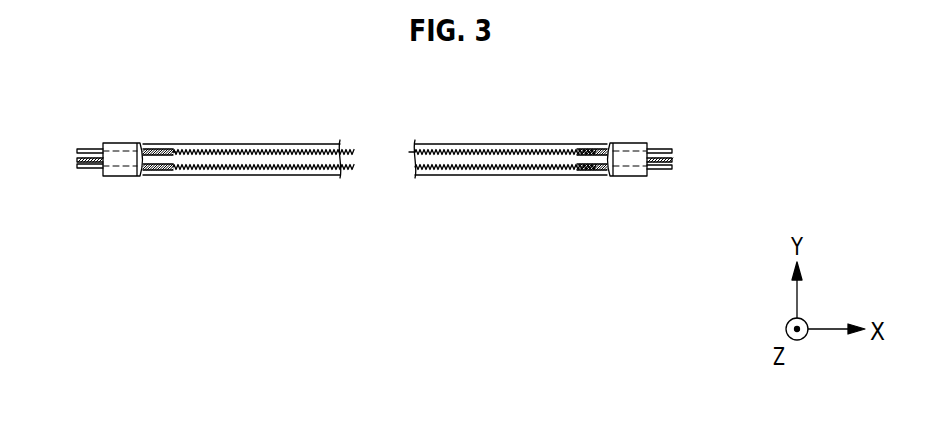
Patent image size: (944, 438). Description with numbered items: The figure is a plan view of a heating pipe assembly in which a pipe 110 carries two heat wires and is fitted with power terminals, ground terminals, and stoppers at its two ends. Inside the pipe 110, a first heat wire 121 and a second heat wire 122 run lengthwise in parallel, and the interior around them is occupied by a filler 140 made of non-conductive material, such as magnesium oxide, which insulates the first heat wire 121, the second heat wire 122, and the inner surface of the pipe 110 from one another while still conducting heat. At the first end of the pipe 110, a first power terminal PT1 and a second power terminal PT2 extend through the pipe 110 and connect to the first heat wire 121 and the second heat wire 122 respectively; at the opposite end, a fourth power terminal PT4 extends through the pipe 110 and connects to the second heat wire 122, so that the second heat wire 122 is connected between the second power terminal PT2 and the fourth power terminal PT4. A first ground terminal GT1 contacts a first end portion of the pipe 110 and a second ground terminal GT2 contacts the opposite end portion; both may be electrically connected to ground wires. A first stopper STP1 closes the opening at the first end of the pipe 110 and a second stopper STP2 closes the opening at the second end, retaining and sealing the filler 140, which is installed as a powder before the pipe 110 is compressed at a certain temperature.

The pipe 110 is at (195, 143).
The first heat wire 121 is at (241, 150).
The second heat wire 122 is at (251, 171).
The filler 140 is at (296, 147).
The first stopper STP1 is at (121, 144).
The second stopper STP2 is at (633, 143).
The first power terminal PT1 is at (77, 151).
The first ground terminal GT1 is at (77, 160).
The second power terminal PT2 is at (77, 166).
The second ground terminal GT2 is at (672, 160).
The fourth power terminal PT4 is at (672, 168).